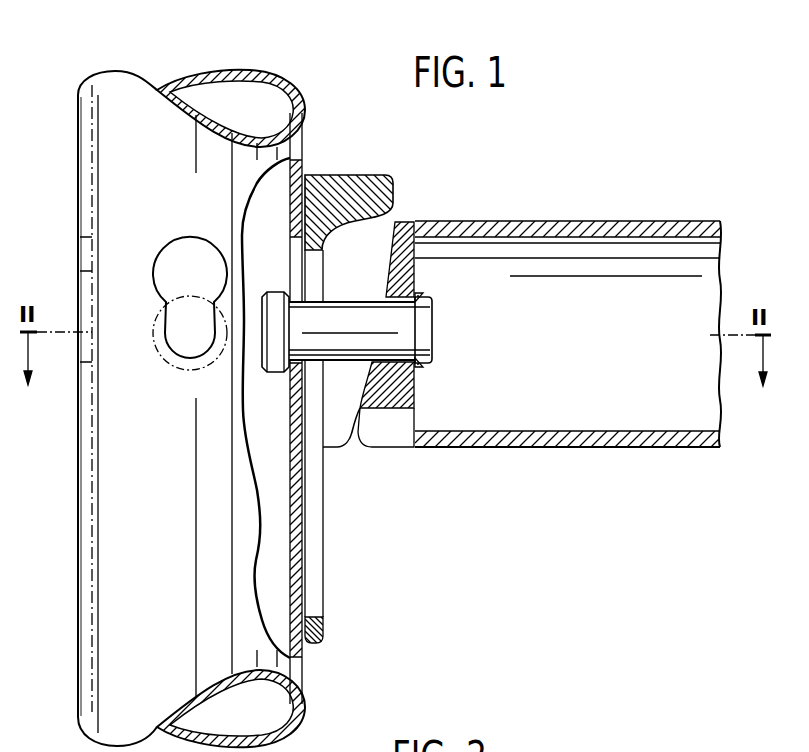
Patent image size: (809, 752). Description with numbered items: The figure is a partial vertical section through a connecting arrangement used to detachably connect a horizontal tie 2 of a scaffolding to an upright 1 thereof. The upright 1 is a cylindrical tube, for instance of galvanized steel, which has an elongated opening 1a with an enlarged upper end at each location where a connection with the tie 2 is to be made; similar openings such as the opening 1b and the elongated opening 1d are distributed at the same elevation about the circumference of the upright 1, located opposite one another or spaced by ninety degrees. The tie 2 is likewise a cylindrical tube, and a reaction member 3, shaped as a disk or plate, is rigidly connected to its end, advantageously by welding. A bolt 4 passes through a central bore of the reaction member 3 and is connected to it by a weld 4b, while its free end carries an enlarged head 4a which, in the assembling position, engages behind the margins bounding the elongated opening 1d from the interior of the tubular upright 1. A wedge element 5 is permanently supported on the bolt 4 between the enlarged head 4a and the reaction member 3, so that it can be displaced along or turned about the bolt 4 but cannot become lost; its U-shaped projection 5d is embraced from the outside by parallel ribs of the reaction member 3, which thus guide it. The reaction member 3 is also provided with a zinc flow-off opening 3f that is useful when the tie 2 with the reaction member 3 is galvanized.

The upright 1 is at (115, 88).
The elongated opening 1a is at (184, 237).
The opening 1b is at (92, 273).
The elongated opening 1d is at (295, 273).
The tie 2 is at (607, 220).
The reaction member 3 is at (403, 373).
The zinc flow-off opening 3f is at (390, 430).
The bolt 4 is at (177, 370).
The enlarged head 4a is at (277, 338).
The weld 4b is at (415, 297).
The wedge element 5 is at (327, 174).
The U-shaped projection 5d is at (367, 187).